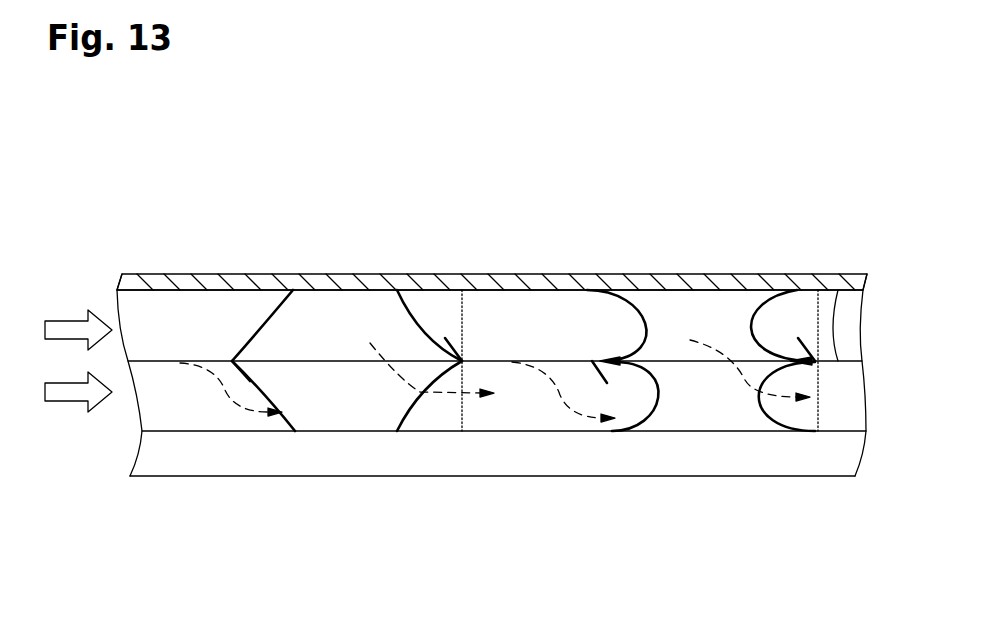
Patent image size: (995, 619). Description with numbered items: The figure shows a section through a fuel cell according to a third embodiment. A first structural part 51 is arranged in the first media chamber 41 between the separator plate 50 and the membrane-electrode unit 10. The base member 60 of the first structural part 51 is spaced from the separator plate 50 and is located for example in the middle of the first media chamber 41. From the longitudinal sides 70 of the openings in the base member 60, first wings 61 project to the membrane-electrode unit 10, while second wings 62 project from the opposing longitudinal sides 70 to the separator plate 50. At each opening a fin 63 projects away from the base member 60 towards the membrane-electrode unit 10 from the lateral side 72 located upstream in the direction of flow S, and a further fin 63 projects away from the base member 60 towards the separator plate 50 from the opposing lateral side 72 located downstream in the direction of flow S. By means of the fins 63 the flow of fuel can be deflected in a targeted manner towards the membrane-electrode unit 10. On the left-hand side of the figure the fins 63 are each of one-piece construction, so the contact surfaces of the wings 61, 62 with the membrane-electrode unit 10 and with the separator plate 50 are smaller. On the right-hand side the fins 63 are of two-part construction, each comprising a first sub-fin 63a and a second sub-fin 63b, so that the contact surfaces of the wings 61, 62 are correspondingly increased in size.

The membrane-electrode unit 10 is at (158, 449).
The first media chamber 41 is at (116, 425).
The separator plate 50 is at (122, 283).
The first structural part 51 is at (200, 361).
The base member 60 is at (860, 290).
The first wings 61 is at (310, 417).
The second wings 62 is at (318, 300).
The fin 63 is at (232, 380).
The first sub-fin 63a is at (592, 368).
The second sub-fin 63b is at (815, 357).
The longitudinal sides 70 is at (357, 362).
The lateral side 72 is at (222, 372).
The direction of flow S is at (64, 384).